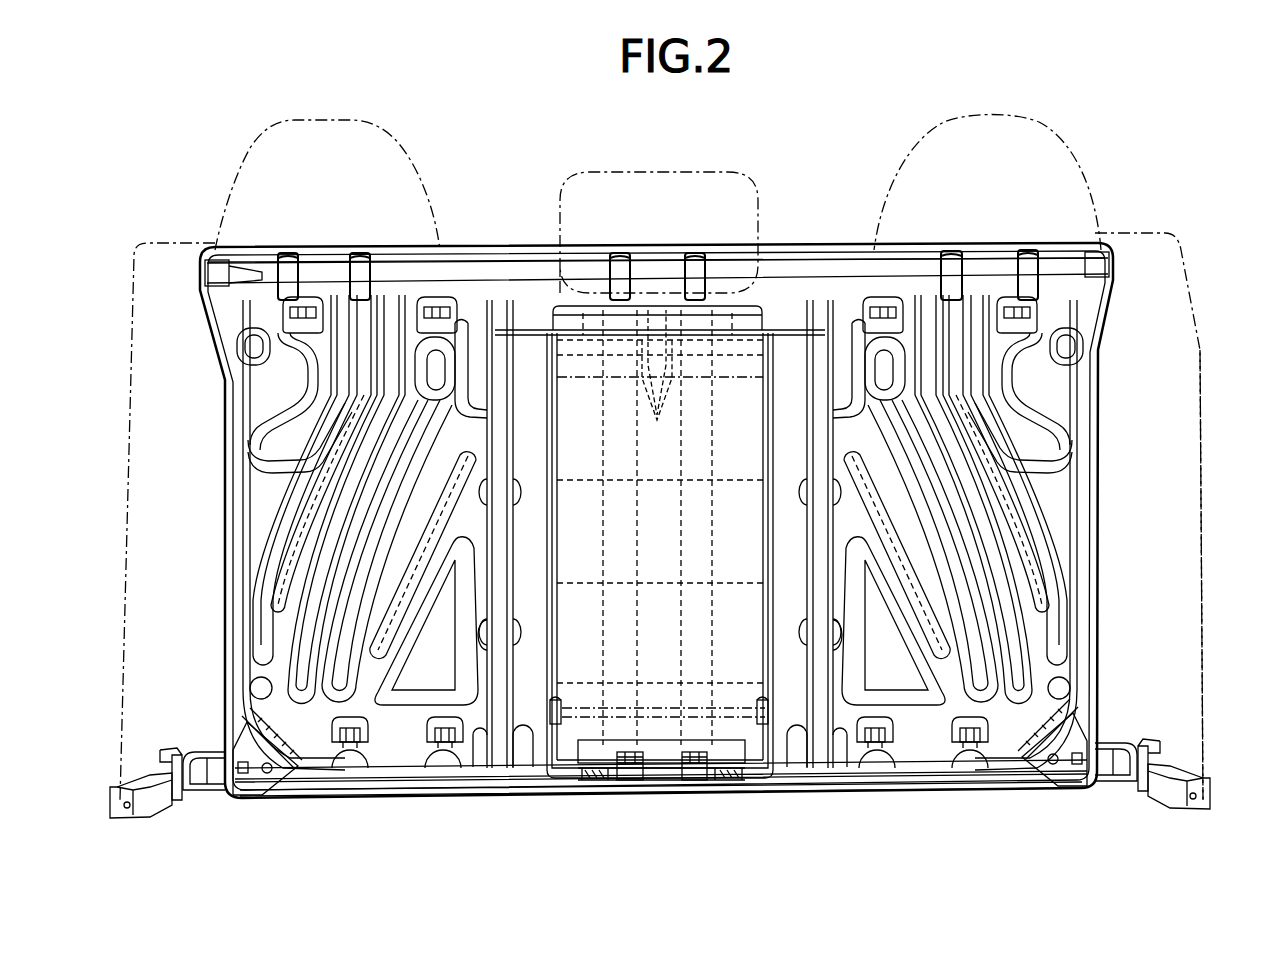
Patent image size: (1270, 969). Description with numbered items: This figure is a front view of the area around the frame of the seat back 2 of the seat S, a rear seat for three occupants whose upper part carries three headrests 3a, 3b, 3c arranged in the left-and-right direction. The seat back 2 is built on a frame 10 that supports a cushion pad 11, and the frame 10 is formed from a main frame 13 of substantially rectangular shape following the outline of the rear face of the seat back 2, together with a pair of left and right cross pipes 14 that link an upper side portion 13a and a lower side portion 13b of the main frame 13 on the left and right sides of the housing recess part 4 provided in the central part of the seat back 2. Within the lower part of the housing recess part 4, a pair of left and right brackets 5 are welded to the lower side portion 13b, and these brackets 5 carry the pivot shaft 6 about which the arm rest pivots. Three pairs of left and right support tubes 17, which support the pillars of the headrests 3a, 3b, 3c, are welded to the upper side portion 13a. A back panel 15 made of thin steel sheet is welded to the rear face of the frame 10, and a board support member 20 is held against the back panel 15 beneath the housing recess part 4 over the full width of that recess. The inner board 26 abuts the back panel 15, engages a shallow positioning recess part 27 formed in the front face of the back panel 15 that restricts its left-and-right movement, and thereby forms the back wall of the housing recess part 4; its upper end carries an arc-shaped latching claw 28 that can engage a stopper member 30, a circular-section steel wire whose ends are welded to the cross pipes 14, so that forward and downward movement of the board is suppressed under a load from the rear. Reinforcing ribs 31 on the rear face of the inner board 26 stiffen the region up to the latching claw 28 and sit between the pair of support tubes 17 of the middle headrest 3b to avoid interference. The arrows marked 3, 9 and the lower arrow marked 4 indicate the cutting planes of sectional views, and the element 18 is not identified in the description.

The seat S is at (1148, 202).
The seat back 2 is at (1196, 301).
The headrest 3a is at (397, 163).
The headrest 3b is at (723, 188).
The headrest 3c is at (1040, 160).
The section line of FIG. 3 is at (659, 105).
The housing recess part 4 is at (695, 683).
The bracket 5 is at (560, 700).
The pivot shaft 6 is at (626, 707).
The section line of FIG. 9 is at (473, 355).
The frame 10 is at (490, 297).
The cushion pad 11 is at (1183, 493).
The main frame 13 is at (1085, 556).
The upper side portion 13a is at (557, 297).
The lower side portion 13b is at (502, 780).
The cross pipe 14 is at (507, 538).
The back panel 15 is at (960, 590).
The support tube 17 is at (350, 250).
The mounting bracket 18 is at (686, 752).
The board support member 20 is at (663, 752).
The inner board 26 is at (676, 526).
The positioning recess part 27 is at (553, 405).
The latching claw 28 is at (583, 313).
The stopper member 30 is at (732, 333).
The reinforcing rib 31 is at (658, 376).